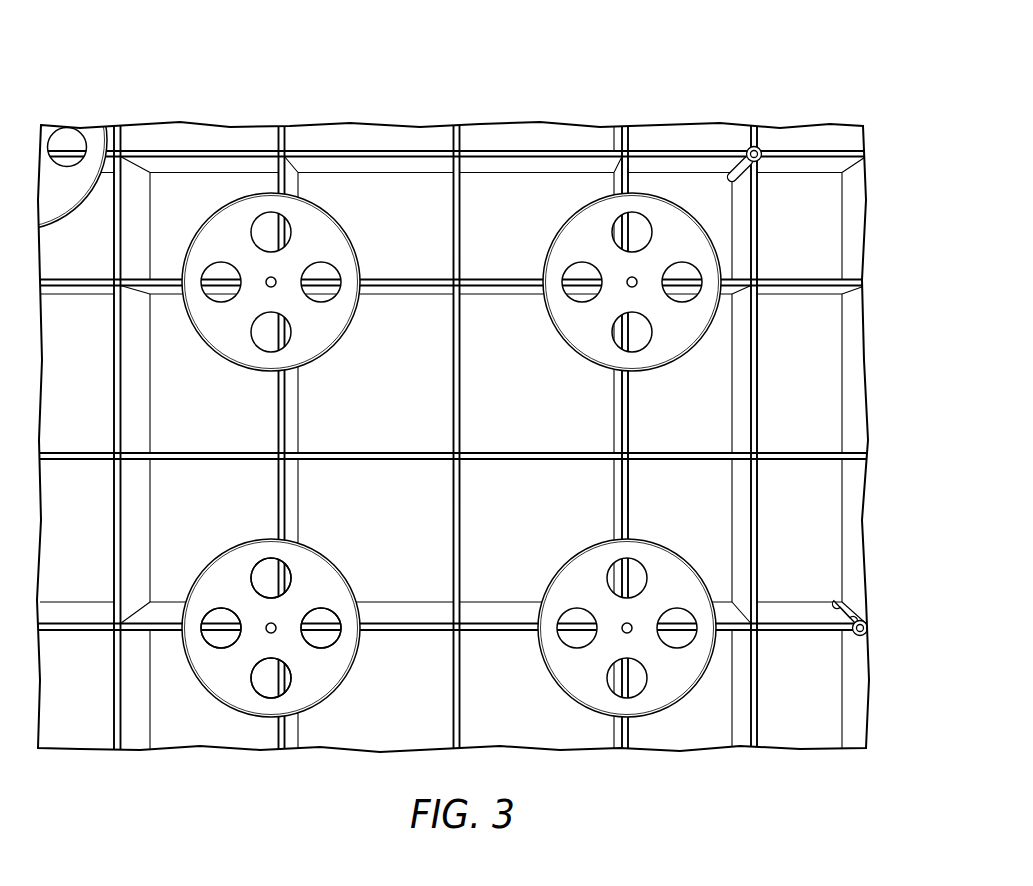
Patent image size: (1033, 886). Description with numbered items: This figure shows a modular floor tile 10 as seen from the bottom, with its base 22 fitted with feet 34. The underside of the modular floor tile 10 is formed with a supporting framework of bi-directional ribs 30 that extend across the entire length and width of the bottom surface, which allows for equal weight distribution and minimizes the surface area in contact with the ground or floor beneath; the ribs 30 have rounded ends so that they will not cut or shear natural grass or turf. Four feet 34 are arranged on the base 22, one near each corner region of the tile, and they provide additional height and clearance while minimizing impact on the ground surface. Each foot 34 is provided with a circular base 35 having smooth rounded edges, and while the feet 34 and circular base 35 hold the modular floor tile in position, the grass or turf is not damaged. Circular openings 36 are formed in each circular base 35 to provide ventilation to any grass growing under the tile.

The modular floor tile 10 is at (667, 75).
The base 22 is at (524, 517).
The ribs 30 is at (390, 447).
The feet 34 is at (365, 665).
The circular base 35 is at (294, 613).
The circular openings 36 is at (267, 578).